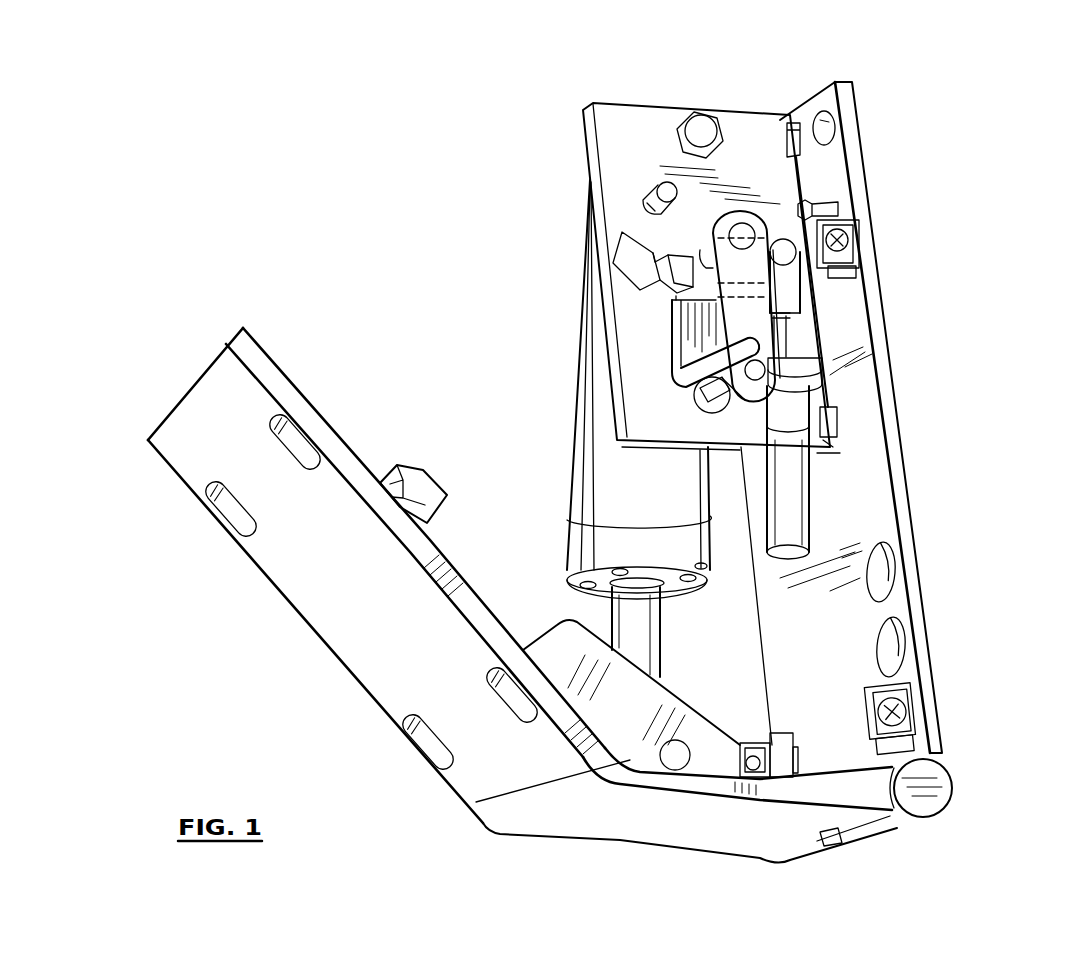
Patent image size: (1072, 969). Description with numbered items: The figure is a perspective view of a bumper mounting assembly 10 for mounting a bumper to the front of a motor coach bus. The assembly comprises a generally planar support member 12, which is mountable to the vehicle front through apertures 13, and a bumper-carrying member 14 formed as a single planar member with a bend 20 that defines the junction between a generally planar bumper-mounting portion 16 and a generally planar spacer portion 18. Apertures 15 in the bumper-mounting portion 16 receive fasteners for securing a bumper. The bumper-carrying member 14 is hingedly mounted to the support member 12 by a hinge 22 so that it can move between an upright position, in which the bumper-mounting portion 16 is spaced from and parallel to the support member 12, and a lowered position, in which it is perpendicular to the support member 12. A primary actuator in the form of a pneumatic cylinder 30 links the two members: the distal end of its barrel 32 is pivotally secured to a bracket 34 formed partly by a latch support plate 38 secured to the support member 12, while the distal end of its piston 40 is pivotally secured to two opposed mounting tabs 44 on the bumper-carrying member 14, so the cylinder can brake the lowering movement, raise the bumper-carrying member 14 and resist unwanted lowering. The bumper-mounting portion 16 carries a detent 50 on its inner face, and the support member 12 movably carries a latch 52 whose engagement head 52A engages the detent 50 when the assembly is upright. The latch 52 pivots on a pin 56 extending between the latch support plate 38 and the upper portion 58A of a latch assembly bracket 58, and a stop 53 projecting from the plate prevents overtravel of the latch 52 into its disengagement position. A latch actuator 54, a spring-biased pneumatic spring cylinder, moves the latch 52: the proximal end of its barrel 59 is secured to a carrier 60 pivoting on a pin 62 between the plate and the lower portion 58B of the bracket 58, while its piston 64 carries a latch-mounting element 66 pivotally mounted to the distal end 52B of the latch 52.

The bumper mounting assembly 10 is at (584, 455).
The support member 12 is at (877, 429).
The apertures 13 is at (830, 128).
The bumper-carrying member 14 is at (447, 788).
The apertures 15 is at (283, 433).
The bumper-mounting portion 16 is at (365, 575).
The spacer portion 18 is at (760, 813).
The bend 20 is at (510, 810).
The hinge 22 is at (937, 783).
The pneumatic cylinder 30 is at (607, 428).
The barrel 32 is at (590, 473).
The bracket 34 is at (683, 247).
The latch support plate 38 is at (625, 118).
The piston 40 is at (655, 640).
The mounting tabs 44 is at (560, 663).
The detent 50 is at (414, 477).
The latch 52 is at (731, 290).
The engagement head 52A is at (613, 252).
The distal end of the latch 52B is at (812, 290).
The stop 53 is at (713, 228).
The latch actuator 54 is at (803, 347).
The pin 56 is at (633, 193).
The latch assembly bracket 58 is at (732, 316).
The upper portion 58A is at (746, 209).
The lower portion 58B is at (749, 404).
The barrel 59 is at (808, 487).
The carrier 60 is at (812, 384).
The pin 62 is at (707, 397).
The piston 64 is at (792, 320).
The latch-mounting element 66 is at (802, 303).